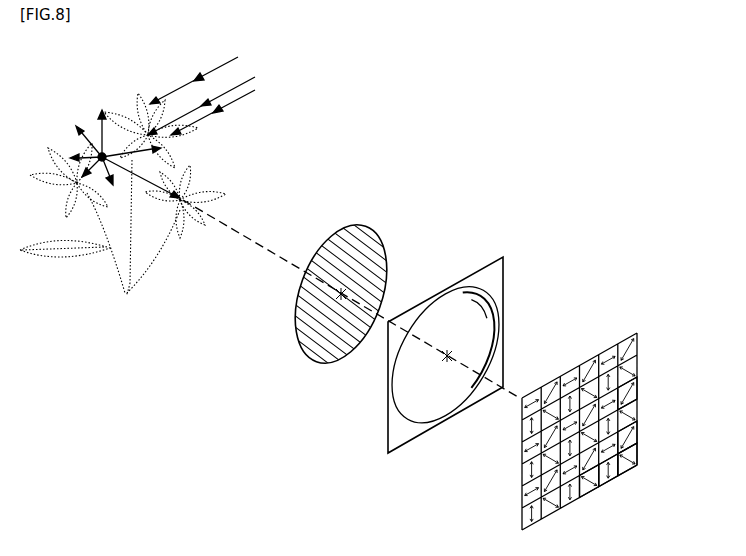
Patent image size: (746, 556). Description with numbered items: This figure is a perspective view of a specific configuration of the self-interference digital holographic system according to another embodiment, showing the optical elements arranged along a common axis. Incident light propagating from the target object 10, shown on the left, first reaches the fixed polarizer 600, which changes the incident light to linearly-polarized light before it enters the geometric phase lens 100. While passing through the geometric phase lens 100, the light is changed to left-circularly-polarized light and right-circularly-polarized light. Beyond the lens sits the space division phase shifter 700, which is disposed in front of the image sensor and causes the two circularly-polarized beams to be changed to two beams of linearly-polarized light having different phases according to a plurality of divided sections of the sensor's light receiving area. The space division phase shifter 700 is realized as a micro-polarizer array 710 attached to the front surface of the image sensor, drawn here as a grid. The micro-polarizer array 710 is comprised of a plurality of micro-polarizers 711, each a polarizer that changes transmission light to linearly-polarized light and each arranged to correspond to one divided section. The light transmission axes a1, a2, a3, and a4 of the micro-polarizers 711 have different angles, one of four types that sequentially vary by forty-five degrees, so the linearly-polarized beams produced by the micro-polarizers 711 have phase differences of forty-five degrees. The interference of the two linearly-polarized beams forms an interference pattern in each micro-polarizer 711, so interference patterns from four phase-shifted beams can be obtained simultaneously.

The target object 10 is at (127, 297).
The fixed polarizer 600 is at (337, 227).
The geometric phase lens 100 is at (469, 278).
The space division phase shifter 700 is at (620, 410).
The micro-polarizer array 710 is at (605, 350).
The micro-polarizer 711 is at (634, 394).
The light transmission axis a1 is at (597, 484).
The light transmission axis a2 is at (628, 438).
The light transmission axis a3 is at (612, 481).
The light transmission axis a4 is at (638, 454).